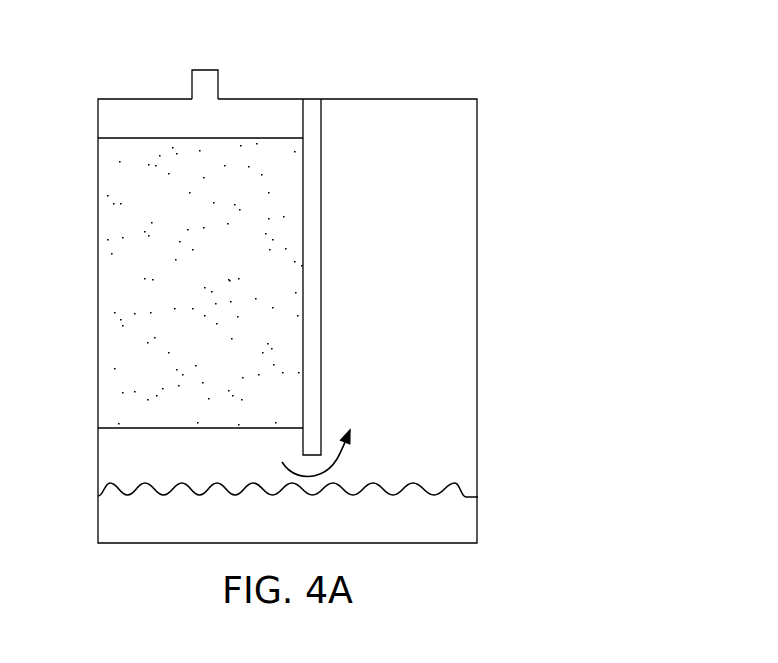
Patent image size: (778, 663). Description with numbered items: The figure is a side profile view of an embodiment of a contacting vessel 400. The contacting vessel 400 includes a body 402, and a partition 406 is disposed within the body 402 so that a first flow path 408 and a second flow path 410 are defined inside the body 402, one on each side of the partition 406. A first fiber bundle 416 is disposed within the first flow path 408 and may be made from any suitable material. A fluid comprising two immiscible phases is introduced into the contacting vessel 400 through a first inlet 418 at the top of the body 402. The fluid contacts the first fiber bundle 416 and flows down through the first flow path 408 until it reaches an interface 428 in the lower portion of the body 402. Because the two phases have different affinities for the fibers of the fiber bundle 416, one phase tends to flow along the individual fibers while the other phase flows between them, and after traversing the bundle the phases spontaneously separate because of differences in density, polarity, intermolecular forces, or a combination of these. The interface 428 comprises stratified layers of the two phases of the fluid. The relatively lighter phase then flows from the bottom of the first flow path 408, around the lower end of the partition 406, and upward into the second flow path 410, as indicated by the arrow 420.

The contacting vessel 400 is at (603, 73).
The body 402 is at (477, 320).
The second partition 406 is at (312, 108).
The first flow path 408 is at (239, 128).
The second flow path 410 is at (393, 140).
The first fiber bundle 416 is at (113, 320).
The first inlet 418 is at (204, 68).
The arrow 420 is at (328, 472).
The interface 428 is at (453, 482).